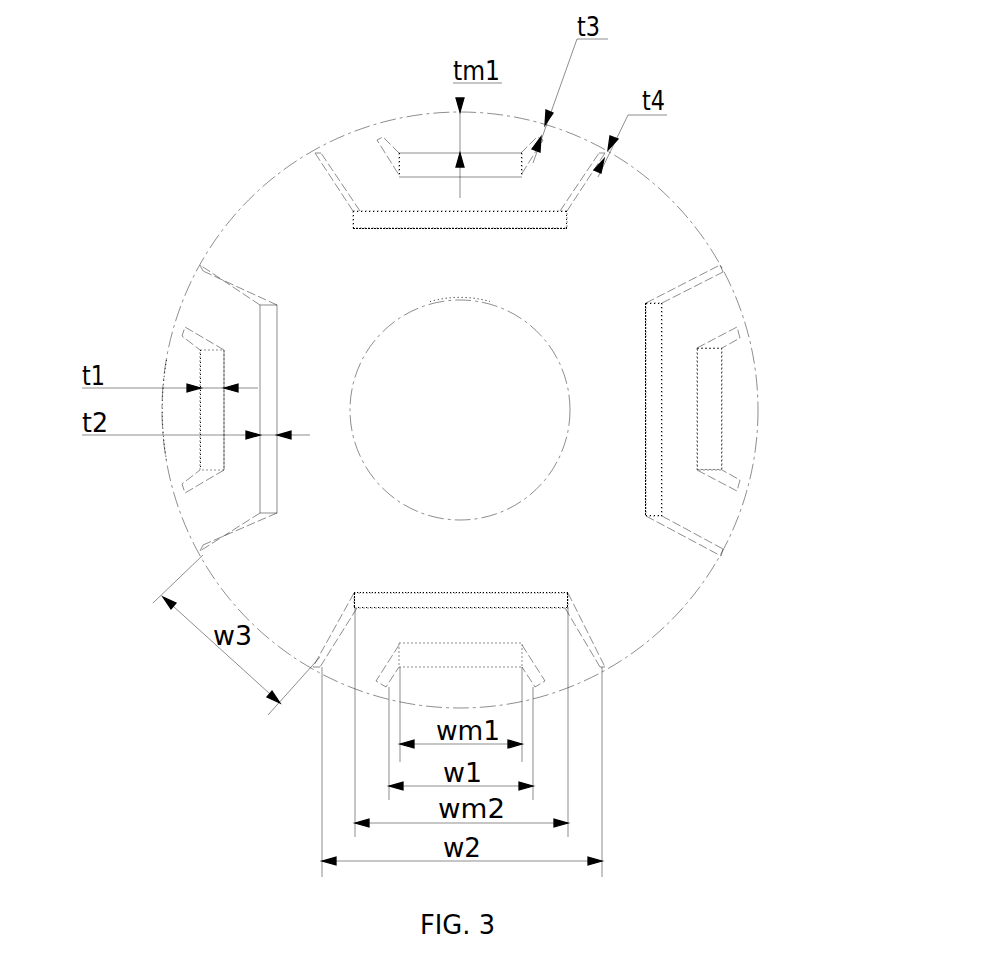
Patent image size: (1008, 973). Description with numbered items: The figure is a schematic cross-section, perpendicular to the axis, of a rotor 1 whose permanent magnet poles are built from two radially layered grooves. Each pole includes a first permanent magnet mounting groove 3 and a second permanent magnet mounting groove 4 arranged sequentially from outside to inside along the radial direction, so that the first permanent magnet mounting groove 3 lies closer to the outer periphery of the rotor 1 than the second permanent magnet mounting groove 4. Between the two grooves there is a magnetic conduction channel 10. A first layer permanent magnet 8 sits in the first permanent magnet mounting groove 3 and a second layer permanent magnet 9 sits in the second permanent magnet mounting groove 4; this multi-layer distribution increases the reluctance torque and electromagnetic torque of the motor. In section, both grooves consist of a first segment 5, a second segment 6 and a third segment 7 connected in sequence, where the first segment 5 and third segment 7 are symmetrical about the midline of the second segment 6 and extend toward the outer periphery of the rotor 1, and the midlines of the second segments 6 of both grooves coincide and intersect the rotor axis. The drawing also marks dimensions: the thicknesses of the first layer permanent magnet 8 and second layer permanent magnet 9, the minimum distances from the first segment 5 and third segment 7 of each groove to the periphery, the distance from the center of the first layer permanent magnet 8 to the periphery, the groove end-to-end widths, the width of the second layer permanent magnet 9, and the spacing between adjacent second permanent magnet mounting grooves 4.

The rotor 1 is at (693, 590).
The first permanent magnet mounting groove 3 is at (722, 373).
The second permanent magnet mounting groove 4 is at (664, 317).
The first segment 5 is at (380, 140).
The second segment 6 is at (488, 153).
The third segment 7 is at (529, 168).
The first layer permanent magnet 8 is at (208, 377).
The second layer permanent magnet 9 is at (270, 465).
The magnetic conduction channel 10 is at (678, 423).